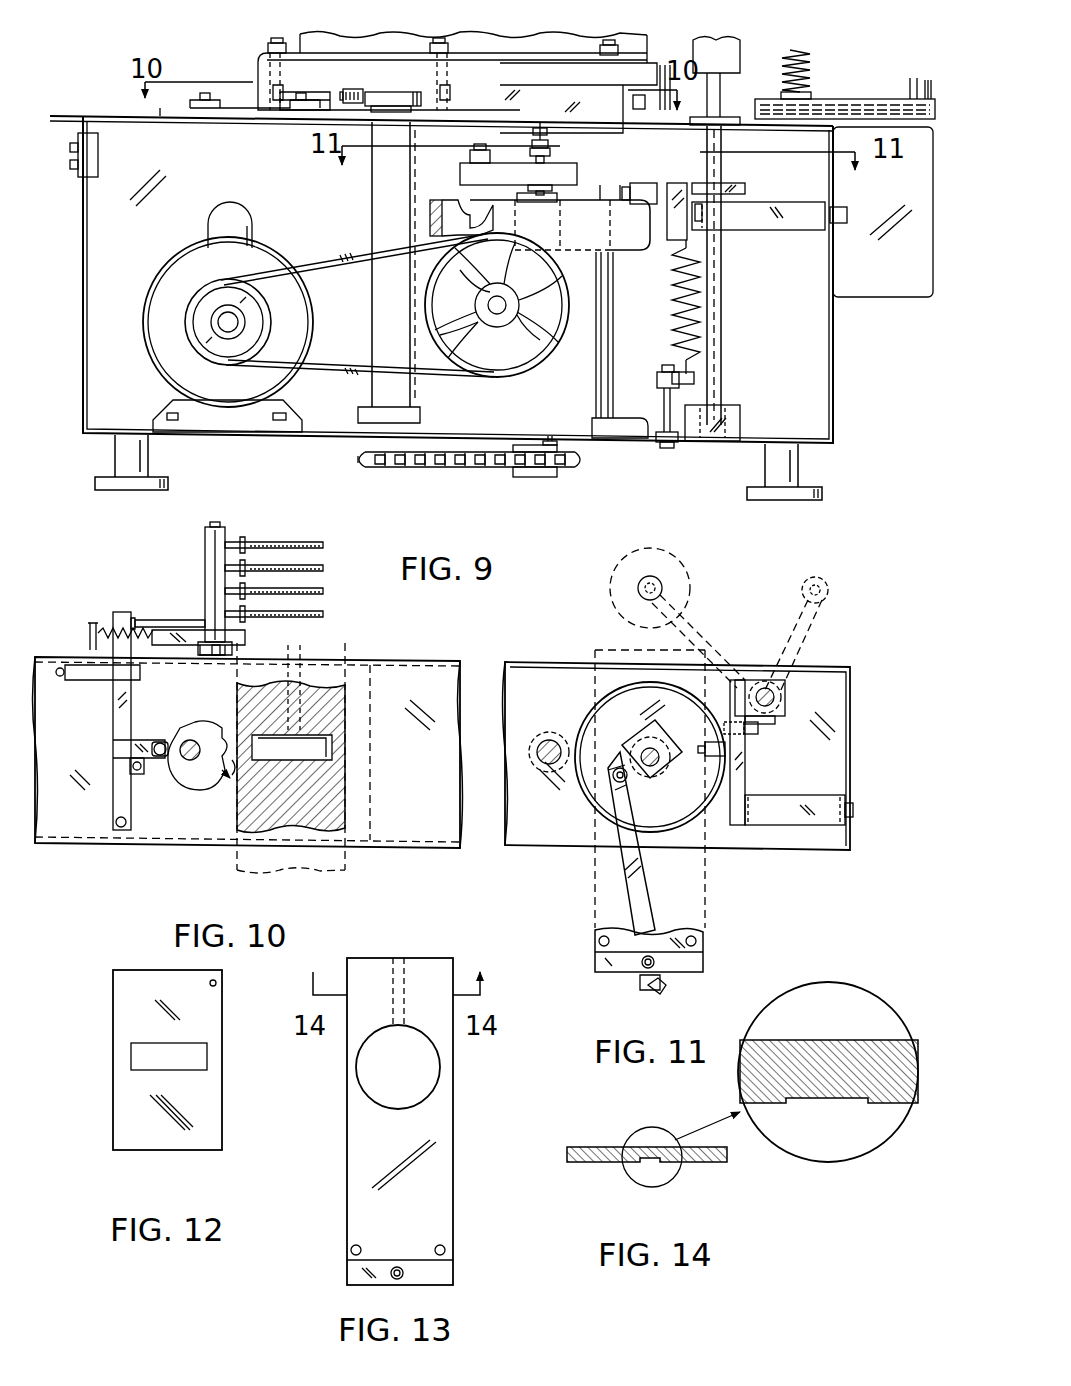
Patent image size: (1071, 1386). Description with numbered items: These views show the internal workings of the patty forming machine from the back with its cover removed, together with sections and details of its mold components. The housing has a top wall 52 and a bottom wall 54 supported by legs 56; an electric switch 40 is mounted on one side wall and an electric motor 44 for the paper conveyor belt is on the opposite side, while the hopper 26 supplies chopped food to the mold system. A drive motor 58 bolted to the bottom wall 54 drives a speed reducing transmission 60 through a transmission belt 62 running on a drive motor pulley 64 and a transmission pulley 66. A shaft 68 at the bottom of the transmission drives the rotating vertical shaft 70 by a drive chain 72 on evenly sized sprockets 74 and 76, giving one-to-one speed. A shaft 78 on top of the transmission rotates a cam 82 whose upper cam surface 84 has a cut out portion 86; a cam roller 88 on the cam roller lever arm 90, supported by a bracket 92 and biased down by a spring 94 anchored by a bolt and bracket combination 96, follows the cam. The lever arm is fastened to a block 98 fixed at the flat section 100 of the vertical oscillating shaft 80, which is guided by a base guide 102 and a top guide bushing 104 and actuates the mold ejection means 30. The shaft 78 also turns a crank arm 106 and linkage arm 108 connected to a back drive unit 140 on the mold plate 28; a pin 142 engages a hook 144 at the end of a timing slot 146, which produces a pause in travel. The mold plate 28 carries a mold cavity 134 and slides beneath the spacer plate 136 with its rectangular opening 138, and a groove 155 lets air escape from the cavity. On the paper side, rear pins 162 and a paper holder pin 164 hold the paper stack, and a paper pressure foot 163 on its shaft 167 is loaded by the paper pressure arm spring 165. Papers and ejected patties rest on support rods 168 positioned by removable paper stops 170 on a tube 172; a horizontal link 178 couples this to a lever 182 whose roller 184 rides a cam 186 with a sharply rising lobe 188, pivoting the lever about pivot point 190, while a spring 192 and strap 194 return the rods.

In FIG. 9, the hopper 26 is at (295, 38).
In FIG. 10, the mold plate 28 is at (348, 868).
In FIG. 11, the mold plate 28 is at (706, 911).
In FIG. 13, the mold plate 28 is at (454, 1185).
In FIG. 14, the mold plate 28 is at (600, 1148).
In FIG. 11, the mold ejection means 30 is at (672, 586).
In FIG. 9, the electric switch 40 is at (78, 170).
In FIG. 9, the electric motor 44 is at (878, 290).
In FIG. 9, the top wall 52 is at (190, 123).
In FIG. 10, the top wall 52 is at (420, 668).
In FIG. 9, the bottom wall 54 is at (325, 440).
In FIG. 11, the bottom wall 54 is at (535, 672).
In FIG. 9, the legs 56 is at (798, 476).
In FIG. 9, the drive motor 58 is at (152, 276).
In FIG. 9, the speed reducing transmission 60 is at (585, 340).
In FIG. 9, the transmission belt 62 is at (326, 265).
In FIG. 9, the drive motor pulley 64 is at (270, 322).
In FIG. 9, the transmission pulley 66 is at (555, 350).
In FIG. 9, the shaft 68 is at (558, 446).
In FIG. 9, the rotating vertical shaft 70 is at (376, 327).
In FIG. 10, the rotating vertical shaft 70 is at (184, 768).
In FIG. 11, the rotating vertical shaft 70 is at (547, 738).
In FIG. 9, the drive chain 72 is at (468, 470).
In FIG. 9, the sprocket 74 is at (565, 472).
In FIG. 9, the sprocket 76 is at (362, 470).
In FIG. 9, the shaft 78 is at (558, 199).
In FIG. 9, the vertical oscillating shaft 80 is at (722, 272).
In FIG. 11, the vertical oscillating shaft 80 is at (786, 694).
In FIG. 9, the cam 82 is at (610, 242).
In FIG. 11, the cam 82 is at (592, 805).
In FIG. 9, the upper cam surface 84 is at (610, 203).
In FIG. 11, the upper cam surface 84 is at (612, 698).
In FIG. 9, the cut out portion 86 is at (460, 206).
In FIG. 9, the cam roller 88 is at (650, 184).
In FIG. 11, the cam roller 88 is at (704, 748).
In FIG. 9, the cam roller lever arm 90 is at (677, 242).
In FIG. 11, the cam roller lever arm 90 is at (745, 782).
In FIG. 9, the bracket 92 is at (790, 222).
In FIG. 11, the bracket 92 is at (786, 815).
In FIG. 9, the spring 94 is at (673, 320).
In FIG. 11, the spring 94 is at (762, 742).
In FIG. 9, the bolt and bracket combination 96 is at (662, 408).
In FIG. 9, the block 98 is at (746, 189).
In FIG. 11, the block 98 is at (785, 713).
In FIG. 9, the flat section 100 is at (708, 180).
In FIG. 9, the base guide 102 is at (741, 421).
In FIG. 9, the top guide bushing 104 is at (727, 120).
In FIG. 9, the crank arm 106 is at (576, 186).
In FIG. 11, the crank arm 106 is at (638, 785).
In FIG. 9, the linkage arm 108 is at (553, 175).
In FIG. 11, the linkage arm 108 is at (642, 907).
In FIG. 13, the mold cavity 134 is at (438, 1078).
In FIG. 10, the spacer plate 136 is at (346, 792).
In FIG. 12, the spacer plate 136 is at (222, 1103).
In FIG. 10, the rectangular opening 138 is at (340, 742).
In FIG. 12, the rectangular opening 138 is at (204, 1051).
In FIG. 11, the back drive unit 140 is at (704, 968).
In FIG. 13, the back drive unit 140 is at (454, 1270).
In FIG. 11, the pin 142 is at (645, 966).
In FIG. 13, the pin 142 is at (396, 1268).
In FIG. 11, the hook 144 is at (656, 993).
In FIG. 11, the timing slot 146 is at (660, 975).
In FIG. 13, the groove 155 is at (402, 965).
In FIG. 14, the groove 155 is at (652, 1166).
In FIG. 9, the rear pins 162 is at (926, 85).
In FIG. 9, the paper pressure foot 163 is at (812, 100).
In FIG. 9, the paper holder pin 164 is at (912, 98).
In FIG. 9, the paper pressure arm spring 165 is at (792, 72).
In FIG. 9, the paper pressure foot shaft 167 is at (800, 50).
In FIG. 10, the support rods 168 is at (300, 545).
In FIG. 10, the removable paper stops 170 is at (246, 545).
In FIG. 10, the tube 172 is at (205, 557).
In FIG. 10, the horizontal link 178 is at (156, 620).
In FIG. 9, the lever 182 is at (290, 106).
In FIG. 10, the lever 182 is at (113, 716).
In FIG. 9, the roller 184 is at (350, 92).
In FIG. 10, the roller 184 is at (160, 742).
In FIG. 9, the cam 186 is at (392, 95).
In FIG. 10, the cam 186 is at (192, 775).
In FIG. 10, the lobe 188 is at (218, 726).
In FIG. 10, the pivot point 190 is at (115, 822).
In FIG. 10, the spring 192 is at (92, 630).
In FIG. 10, the strap 194 is at (186, 645).